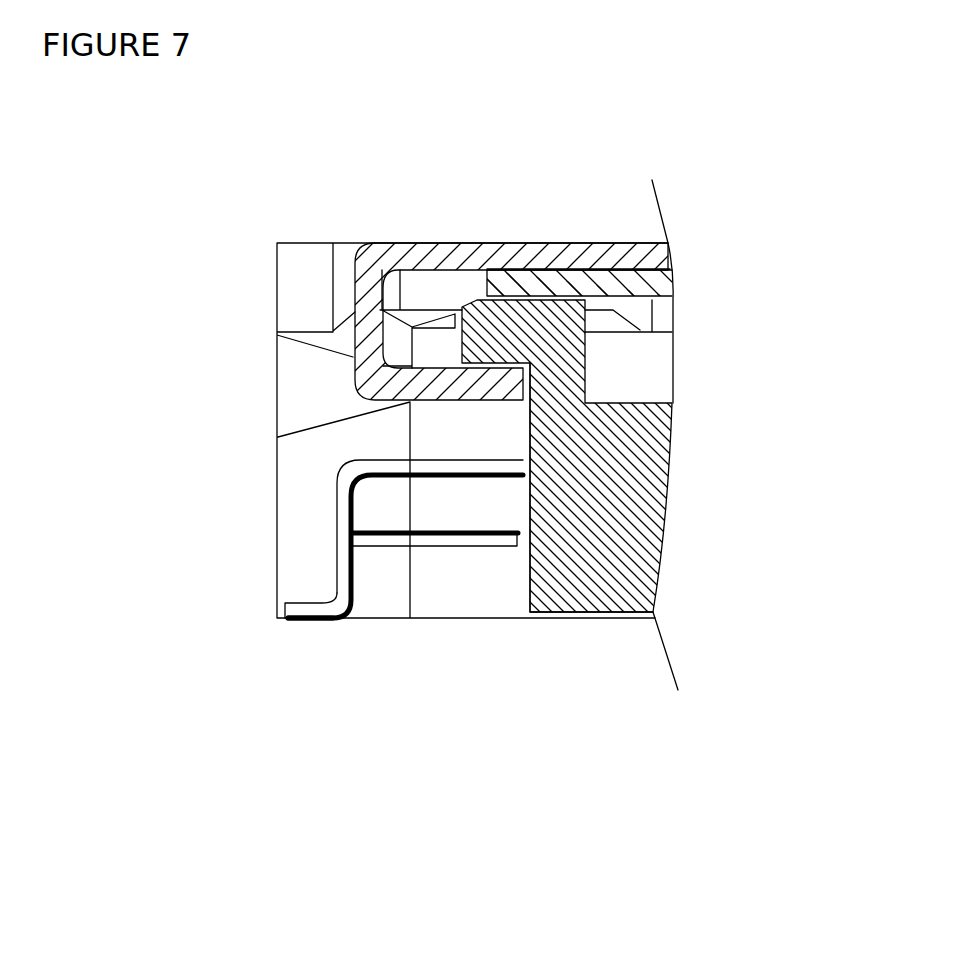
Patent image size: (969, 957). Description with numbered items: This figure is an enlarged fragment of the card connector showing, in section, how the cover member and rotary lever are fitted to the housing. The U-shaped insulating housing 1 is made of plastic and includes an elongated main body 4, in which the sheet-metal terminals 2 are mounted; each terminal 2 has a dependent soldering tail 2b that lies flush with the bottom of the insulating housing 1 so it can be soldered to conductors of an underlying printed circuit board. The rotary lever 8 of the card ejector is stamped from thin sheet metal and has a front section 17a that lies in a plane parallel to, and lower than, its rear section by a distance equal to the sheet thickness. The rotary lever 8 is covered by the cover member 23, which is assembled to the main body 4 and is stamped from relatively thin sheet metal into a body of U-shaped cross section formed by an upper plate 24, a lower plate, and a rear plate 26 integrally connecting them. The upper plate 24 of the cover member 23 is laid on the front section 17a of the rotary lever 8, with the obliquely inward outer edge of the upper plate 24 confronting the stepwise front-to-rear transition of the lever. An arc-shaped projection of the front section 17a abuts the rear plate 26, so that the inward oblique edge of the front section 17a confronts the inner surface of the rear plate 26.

The insulating housing 1 is at (650, 536).
The terminal 2 is at (490, 548).
The soldering tail 2b is at (303, 607).
The main body 4 is at (562, 581).
The rotary lever 8 is at (672, 291).
The front section 17a is at (633, 270).
The cover member 23 is at (404, 243).
The upper plate 24 is at (578, 257).
The rear plate 26 is at (370, 311).